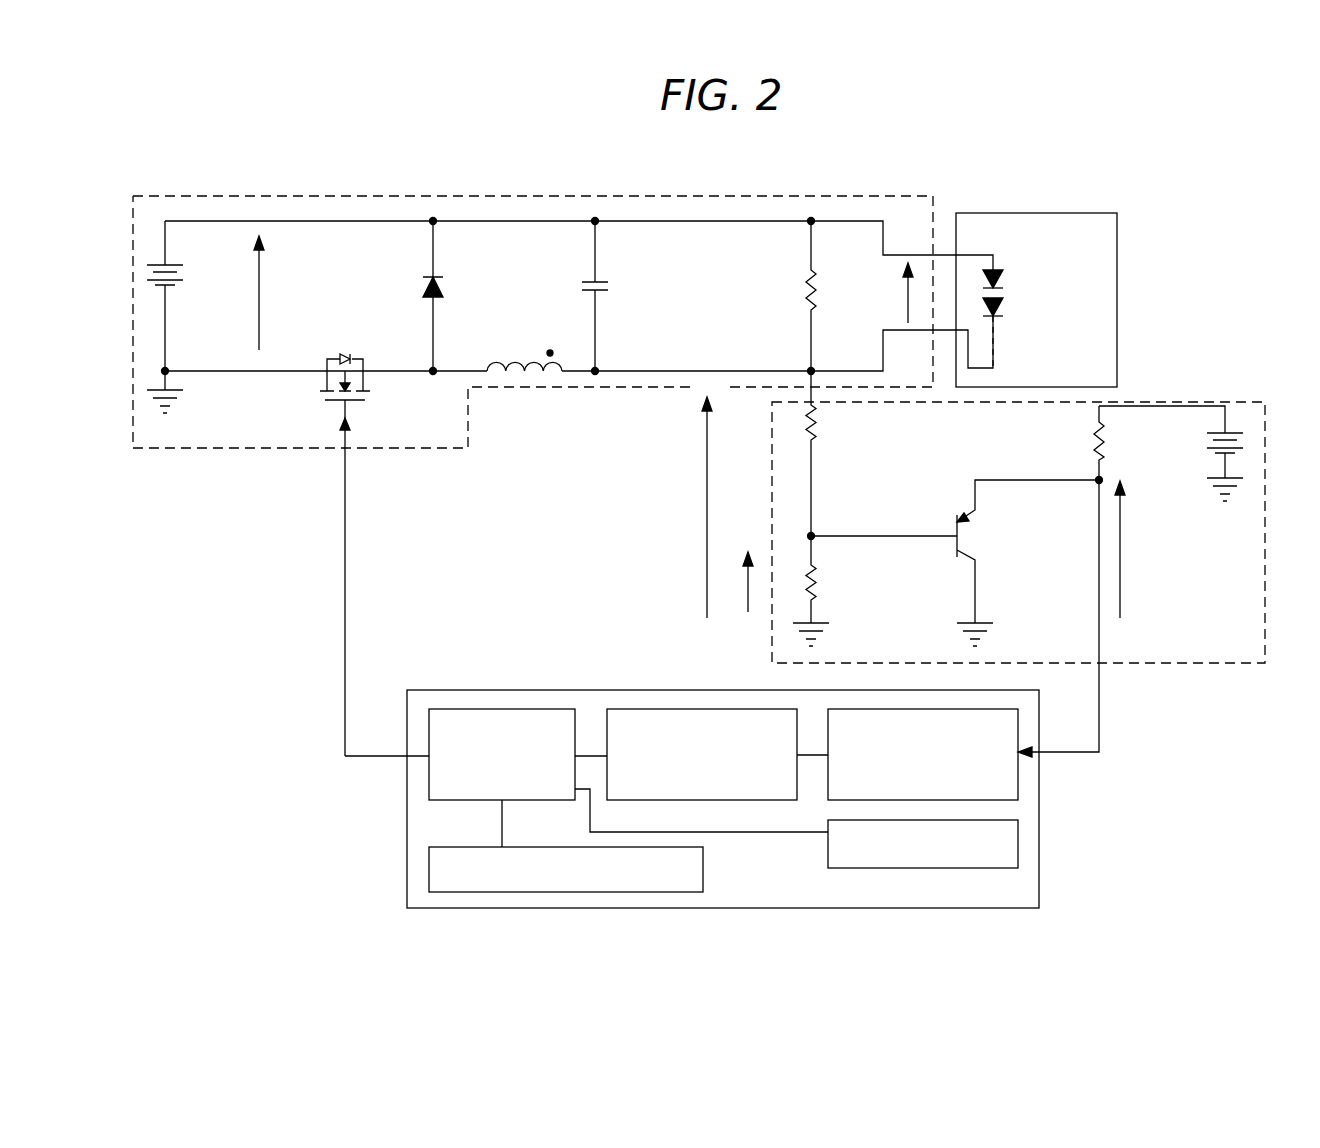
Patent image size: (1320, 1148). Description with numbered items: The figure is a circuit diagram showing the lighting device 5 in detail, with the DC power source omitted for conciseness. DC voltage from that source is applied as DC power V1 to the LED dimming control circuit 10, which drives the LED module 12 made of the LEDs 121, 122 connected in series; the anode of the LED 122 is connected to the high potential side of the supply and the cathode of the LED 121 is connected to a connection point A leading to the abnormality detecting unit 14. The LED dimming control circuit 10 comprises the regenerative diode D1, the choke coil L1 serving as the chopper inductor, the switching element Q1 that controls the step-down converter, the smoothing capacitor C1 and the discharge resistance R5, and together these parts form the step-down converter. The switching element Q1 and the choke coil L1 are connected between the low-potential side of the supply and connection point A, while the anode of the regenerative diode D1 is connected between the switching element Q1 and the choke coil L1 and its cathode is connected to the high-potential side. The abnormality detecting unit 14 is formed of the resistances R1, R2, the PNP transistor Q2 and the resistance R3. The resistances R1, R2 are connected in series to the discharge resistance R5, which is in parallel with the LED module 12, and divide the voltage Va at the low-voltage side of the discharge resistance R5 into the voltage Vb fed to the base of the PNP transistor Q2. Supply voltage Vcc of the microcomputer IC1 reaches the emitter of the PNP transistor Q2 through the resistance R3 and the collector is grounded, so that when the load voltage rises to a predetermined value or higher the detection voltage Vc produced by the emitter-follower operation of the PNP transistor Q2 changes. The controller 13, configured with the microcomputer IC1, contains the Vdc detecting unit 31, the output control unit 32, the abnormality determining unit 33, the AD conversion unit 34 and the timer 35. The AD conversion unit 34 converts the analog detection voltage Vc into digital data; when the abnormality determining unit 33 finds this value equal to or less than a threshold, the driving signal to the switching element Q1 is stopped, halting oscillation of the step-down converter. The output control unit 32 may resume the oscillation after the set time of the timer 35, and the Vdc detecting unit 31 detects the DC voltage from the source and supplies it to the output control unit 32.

The lighting device 5 is at (943, 157).
The LED dimming control circuit 10 is at (606, 195).
The LED module 12 is at (1047, 213).
The controller 13 is at (470, 650).
The abnormality detecting unit 14 is at (1198, 665).
The Vdc detecting unit 31 is at (429, 870).
The output control unit 32 is at (517, 709).
The abnormality determining unit 33 is at (667, 709).
The AD conversion unit 34 is at (1018, 722).
The timer 35 is at (1018, 846).
The LED 121 is at (1004, 309).
The LED 122 is at (1004, 281).
The DC power V1 is at (183, 267).
The regenerative diode D1 is at (423, 288).
The switching element Q1 is at (327, 359).
The choke coil L1 is at (496, 362).
The smoothing capacitor C1 is at (612, 288).
The discharge resistance R5 is at (806, 284).
The resistance R1 is at (818, 422).
The resistance R2 is at (818, 581).
The resistance R3 is at (1092, 446).
The PNP transistor Q2 is at (978, 538).
The microcomputer IC1 is at (1040, 804).